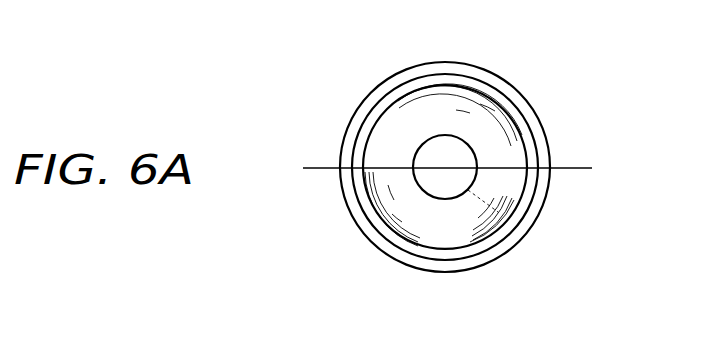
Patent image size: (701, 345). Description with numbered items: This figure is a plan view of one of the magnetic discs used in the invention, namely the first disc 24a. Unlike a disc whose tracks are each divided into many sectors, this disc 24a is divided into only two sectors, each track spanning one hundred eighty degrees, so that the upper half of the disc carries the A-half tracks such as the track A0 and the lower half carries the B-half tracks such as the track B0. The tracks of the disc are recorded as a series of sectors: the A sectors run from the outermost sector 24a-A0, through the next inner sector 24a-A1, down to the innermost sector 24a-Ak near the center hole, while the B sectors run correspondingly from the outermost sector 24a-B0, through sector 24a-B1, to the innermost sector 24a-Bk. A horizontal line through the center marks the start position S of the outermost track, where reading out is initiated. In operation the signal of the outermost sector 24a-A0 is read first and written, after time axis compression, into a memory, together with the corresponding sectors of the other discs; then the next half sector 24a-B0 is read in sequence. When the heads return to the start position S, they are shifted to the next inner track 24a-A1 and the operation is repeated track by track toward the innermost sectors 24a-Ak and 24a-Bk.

The magnetic disc 24a is at (377, 244).
The track A0 is at (352, 122).
The track B0 is at (357, 213).
The sector 24a-A0 is at (470, 80).
The sector 24a-A1 is at (392, 102).
The sector 24a-Ak is at (466, 140).
The sector 24a-B0 is at (490, 248).
The sector 24a-B1 is at (448, 250).
The sector 24a-Bk is at (503, 205).
The start position S is at (350, 176).